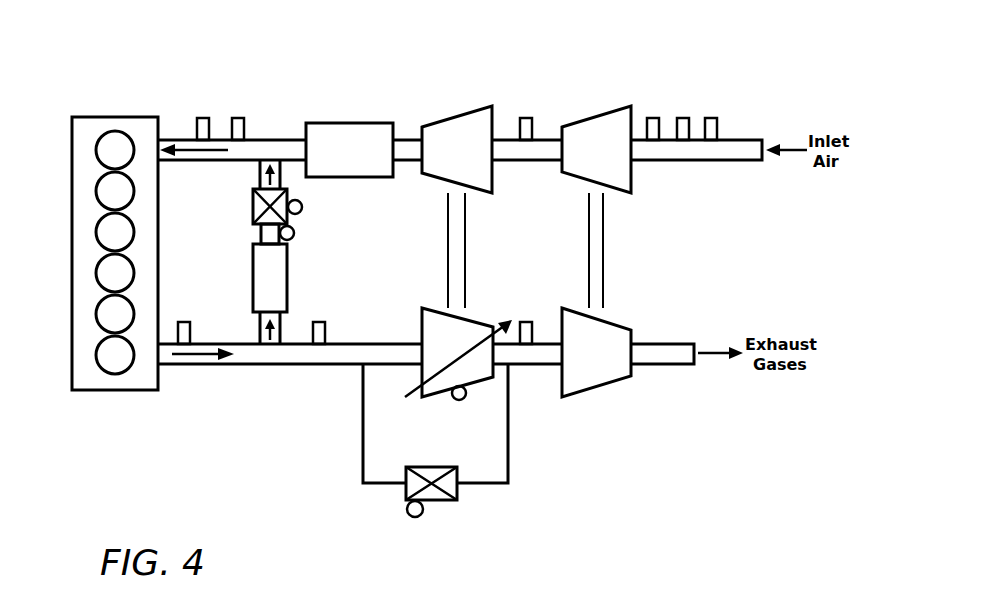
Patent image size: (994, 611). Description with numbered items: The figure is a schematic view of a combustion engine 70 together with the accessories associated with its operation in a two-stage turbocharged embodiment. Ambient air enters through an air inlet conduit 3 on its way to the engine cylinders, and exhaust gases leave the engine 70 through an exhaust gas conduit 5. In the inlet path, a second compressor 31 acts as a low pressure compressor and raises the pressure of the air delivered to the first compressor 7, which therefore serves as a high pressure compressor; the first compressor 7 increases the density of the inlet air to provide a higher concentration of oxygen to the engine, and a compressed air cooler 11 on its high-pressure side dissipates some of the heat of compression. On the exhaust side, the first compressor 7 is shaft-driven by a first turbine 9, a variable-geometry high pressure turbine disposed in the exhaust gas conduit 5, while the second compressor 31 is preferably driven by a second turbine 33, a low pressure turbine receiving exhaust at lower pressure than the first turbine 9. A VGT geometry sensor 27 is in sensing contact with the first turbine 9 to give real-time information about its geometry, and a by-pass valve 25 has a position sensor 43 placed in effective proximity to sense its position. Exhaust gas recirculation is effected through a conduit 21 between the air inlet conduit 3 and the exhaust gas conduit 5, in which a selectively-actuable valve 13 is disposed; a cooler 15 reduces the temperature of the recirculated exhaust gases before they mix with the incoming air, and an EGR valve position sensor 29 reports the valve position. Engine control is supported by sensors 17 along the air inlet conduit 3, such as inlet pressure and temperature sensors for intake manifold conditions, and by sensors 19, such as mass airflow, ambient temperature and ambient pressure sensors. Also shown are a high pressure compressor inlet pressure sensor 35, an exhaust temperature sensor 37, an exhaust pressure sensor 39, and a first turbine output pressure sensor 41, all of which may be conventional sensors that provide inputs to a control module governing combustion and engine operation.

The air inlet conduit 3 is at (270, 147).
The exhaust gas conduit 5 is at (342, 356).
The first compressor 7 is at (452, 125).
The first turbine 9 is at (427, 325).
The compressed air cooler 11 is at (350, 133).
The selectively-actuable valve 13 is at (260, 210).
The cooler 15 is at (265, 270).
The sensors 17 is at (203, 118).
The sensors 19 is at (653, 118).
The conduit 21 is at (263, 237).
The by-pass valve 25 is at (458, 490).
The VGT geometry sensor 27 is at (458, 400).
The EGR valve position sensor 29 is at (302, 207).
The second compressor 31 is at (590, 128).
The second turbine 33 is at (595, 378).
The high pressure compressor inlet pressure sensor 35 is at (526, 118).
The exhaust temperature sensor 37 is at (184, 320).
The exhaust pressure sensor 39 is at (319, 320).
The first turbine output pressure sensor 41 is at (526, 320).
The position sensor 43 is at (410, 516).
The combustion engine 70 is at (62, 263).